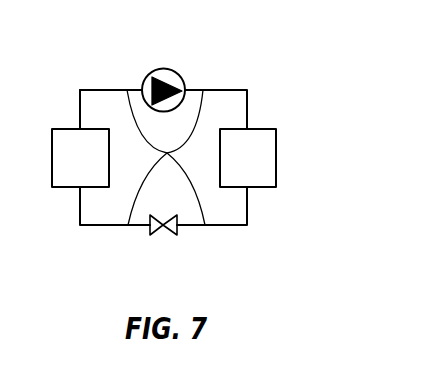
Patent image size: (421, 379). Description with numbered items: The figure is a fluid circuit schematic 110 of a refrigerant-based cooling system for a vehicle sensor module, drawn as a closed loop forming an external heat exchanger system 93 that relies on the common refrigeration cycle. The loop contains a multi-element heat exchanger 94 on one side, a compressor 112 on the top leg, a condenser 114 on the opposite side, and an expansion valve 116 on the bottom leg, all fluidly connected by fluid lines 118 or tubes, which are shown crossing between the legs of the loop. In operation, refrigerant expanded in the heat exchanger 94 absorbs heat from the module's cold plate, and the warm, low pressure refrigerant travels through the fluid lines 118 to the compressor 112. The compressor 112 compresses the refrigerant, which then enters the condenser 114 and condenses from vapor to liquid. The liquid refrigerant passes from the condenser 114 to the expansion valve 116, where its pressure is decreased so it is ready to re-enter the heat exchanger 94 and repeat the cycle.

The fluid circuit schematic 110 is at (220, 50).
The external heat exchanger system 93 is at (94, 79).
The compressor 112 is at (163, 68).
The multi-element heat exchanger 94 is at (52, 142).
The condenser 114 is at (276, 140).
The expansion valve 116 is at (173, 233).
The fluid lines 118 is at (166, 155).